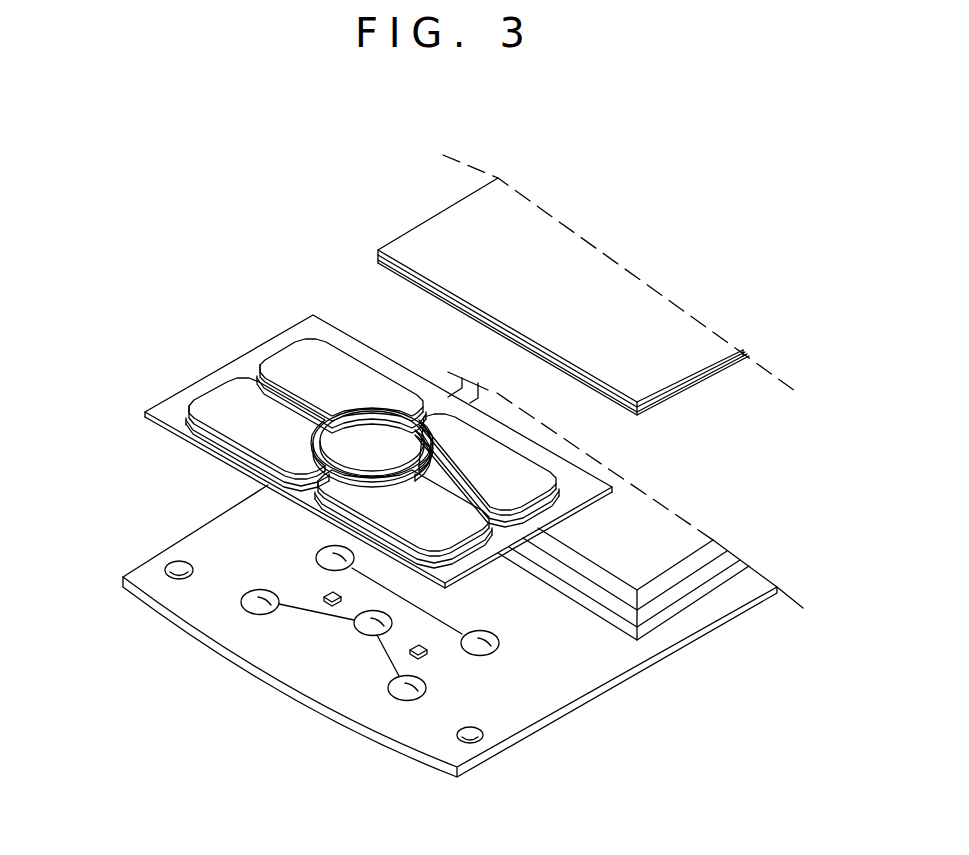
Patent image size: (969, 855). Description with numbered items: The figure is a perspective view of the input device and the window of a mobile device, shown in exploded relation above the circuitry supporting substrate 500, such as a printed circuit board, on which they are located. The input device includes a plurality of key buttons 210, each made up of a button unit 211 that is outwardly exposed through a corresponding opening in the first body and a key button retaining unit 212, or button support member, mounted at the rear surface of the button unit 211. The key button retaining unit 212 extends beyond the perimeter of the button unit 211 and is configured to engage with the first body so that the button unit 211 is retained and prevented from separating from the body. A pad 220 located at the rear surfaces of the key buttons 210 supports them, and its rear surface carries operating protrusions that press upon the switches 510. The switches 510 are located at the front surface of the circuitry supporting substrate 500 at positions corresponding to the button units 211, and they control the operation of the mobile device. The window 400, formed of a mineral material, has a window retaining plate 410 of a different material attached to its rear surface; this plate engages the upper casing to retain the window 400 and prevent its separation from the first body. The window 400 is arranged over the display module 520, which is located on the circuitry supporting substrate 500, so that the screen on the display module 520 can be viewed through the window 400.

The key button 210 is at (293, 453).
The button unit 211 is at (218, 398).
The key button retaining unit 212 is at (163, 413).
The pad 220 is at (185, 440).
The window 400 is at (430, 230).
The window retaining plate 410 is at (378, 258).
The circuitry supporting substrate 500 is at (542, 678).
The switches 510 is at (247, 605).
The display module 520 is at (665, 582).